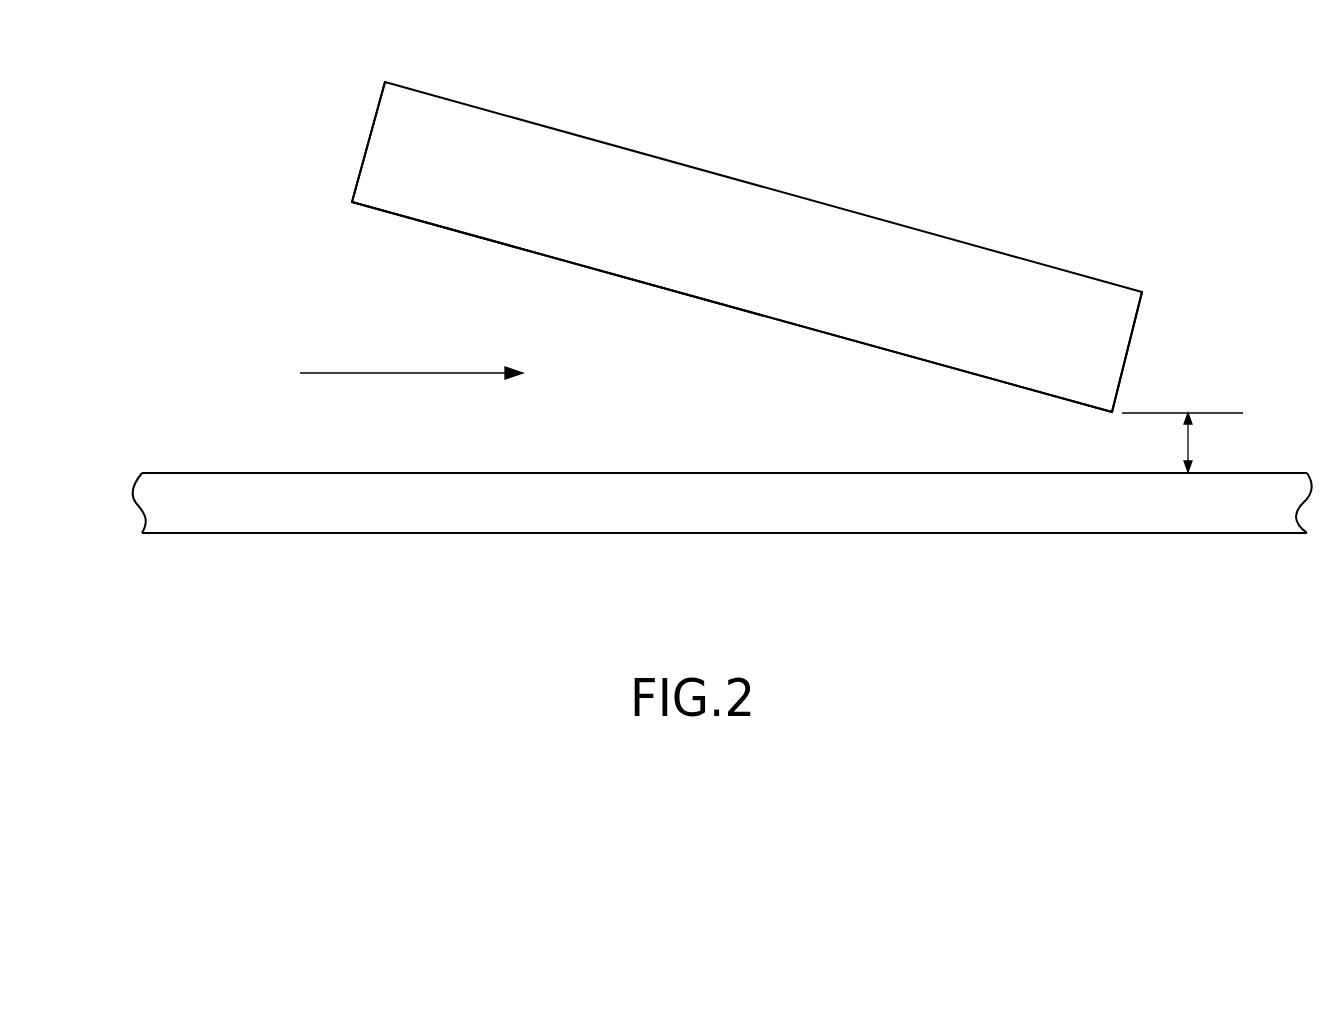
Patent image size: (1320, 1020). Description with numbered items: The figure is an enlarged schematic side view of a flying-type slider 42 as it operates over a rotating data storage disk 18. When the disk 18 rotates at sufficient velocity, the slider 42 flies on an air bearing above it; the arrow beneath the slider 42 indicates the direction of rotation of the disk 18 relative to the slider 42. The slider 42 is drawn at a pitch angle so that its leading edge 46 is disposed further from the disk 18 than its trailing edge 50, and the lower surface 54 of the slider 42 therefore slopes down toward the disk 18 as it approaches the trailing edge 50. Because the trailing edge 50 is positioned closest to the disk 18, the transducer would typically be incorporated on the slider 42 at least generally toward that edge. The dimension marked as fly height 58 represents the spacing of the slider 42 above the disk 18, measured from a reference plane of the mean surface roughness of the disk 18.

The data storage disk 18 is at (420, 472).
The slider 42 is at (746, 256).
The leading edge 46 is at (352, 200).
The trailing edge 50 is at (1104, 412).
The bottom surface of blade 54 is at (467, 236).
The fly height 58 is at (1189, 443).